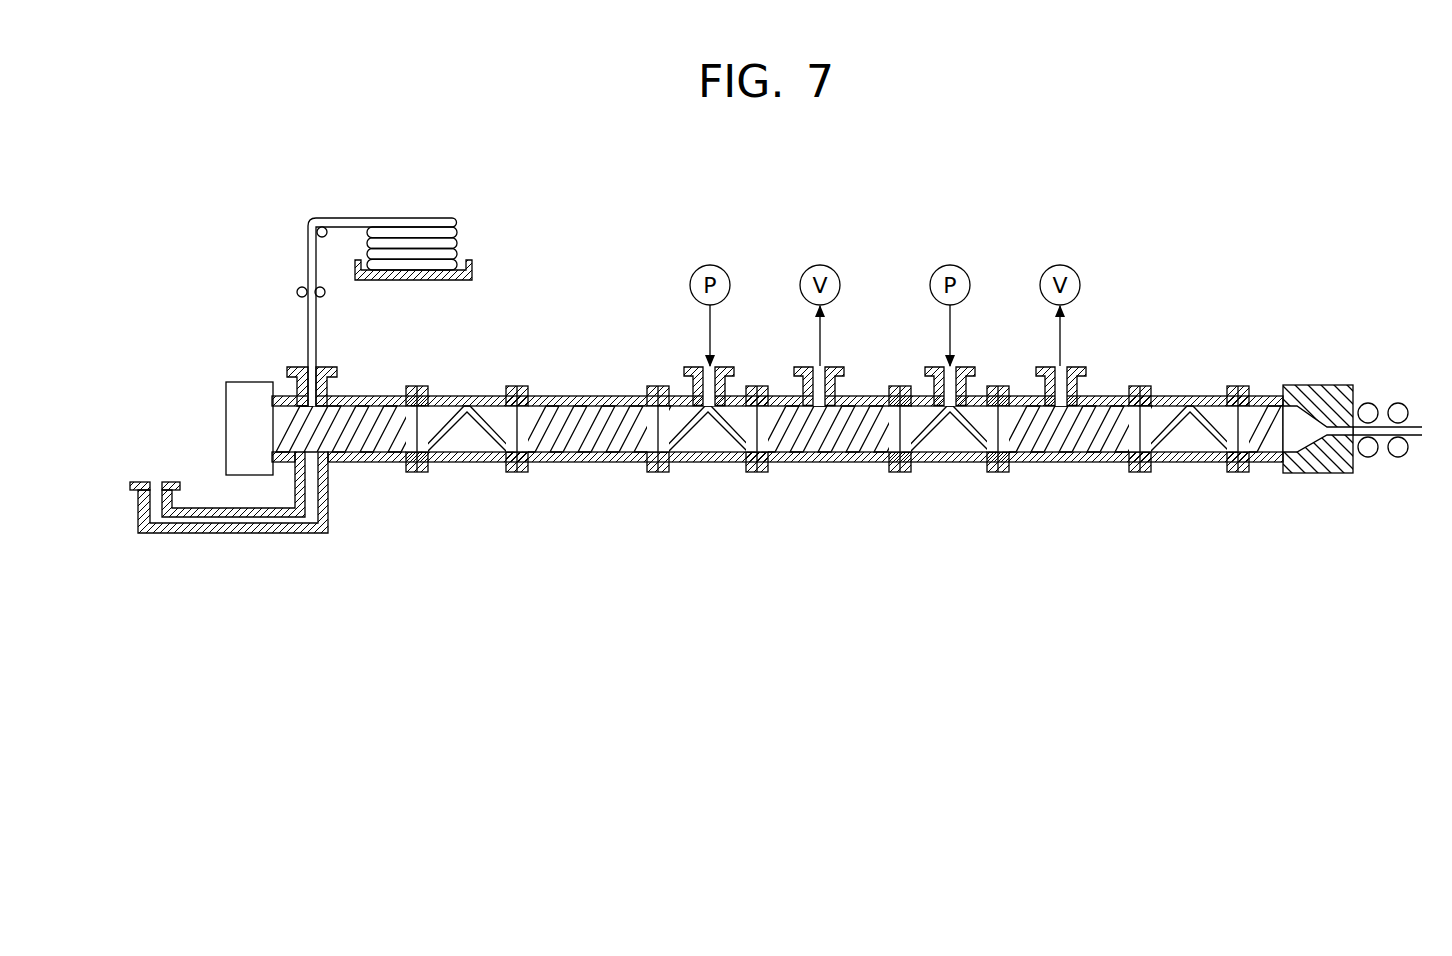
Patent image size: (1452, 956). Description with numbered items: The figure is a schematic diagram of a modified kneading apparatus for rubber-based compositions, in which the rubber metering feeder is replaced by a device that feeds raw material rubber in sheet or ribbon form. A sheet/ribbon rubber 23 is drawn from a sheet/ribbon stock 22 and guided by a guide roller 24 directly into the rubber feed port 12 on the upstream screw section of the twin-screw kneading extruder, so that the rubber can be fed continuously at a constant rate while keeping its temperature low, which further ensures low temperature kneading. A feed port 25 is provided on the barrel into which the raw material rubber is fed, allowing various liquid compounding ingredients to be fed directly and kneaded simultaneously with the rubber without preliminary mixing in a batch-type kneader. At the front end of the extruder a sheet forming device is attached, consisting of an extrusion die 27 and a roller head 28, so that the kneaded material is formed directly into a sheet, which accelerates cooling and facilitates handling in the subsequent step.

The rubber feed port 12 is at (338, 388).
The sheet/ribbon stock 22 is at (486, 258).
The sheet/ribbon rubber 23 is at (398, 213).
The guide roller 24 is at (296, 279).
The feed port 25 is at (142, 479).
The extrusion die 27 is at (1323, 483).
The roller head 28 is at (1368, 466).